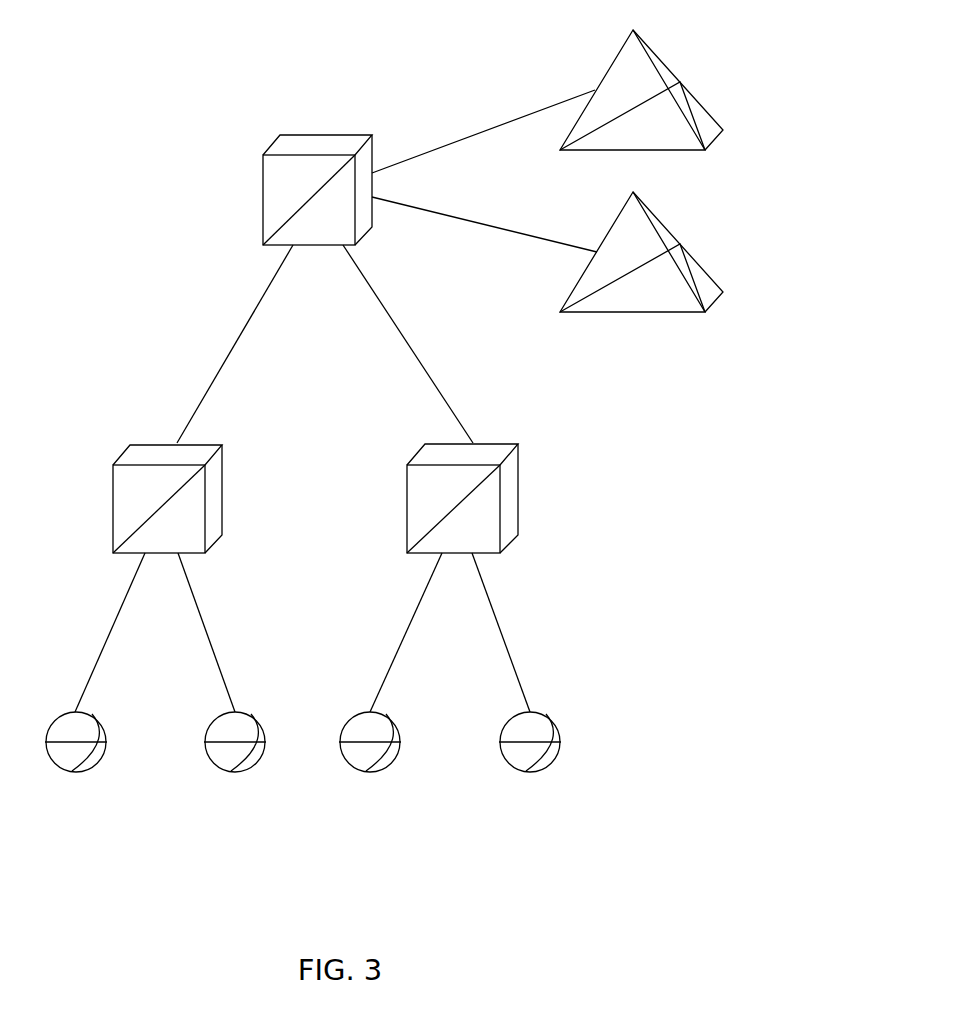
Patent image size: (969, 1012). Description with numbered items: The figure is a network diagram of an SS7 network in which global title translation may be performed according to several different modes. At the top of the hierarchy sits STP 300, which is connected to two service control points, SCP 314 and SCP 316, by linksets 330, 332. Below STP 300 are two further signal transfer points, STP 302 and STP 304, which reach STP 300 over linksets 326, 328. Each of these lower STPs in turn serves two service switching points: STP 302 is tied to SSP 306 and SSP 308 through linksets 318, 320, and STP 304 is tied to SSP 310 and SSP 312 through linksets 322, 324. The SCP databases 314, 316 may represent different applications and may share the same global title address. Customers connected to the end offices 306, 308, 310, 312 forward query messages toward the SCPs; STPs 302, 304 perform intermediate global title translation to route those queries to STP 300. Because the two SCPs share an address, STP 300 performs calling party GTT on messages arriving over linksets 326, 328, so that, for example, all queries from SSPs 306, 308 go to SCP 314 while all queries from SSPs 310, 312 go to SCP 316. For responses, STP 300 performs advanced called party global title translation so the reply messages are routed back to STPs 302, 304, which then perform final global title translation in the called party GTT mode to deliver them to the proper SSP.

The STP 300 is at (263, 178).
The STP 302 is at (113, 485).
The STP 304 is at (407, 485).
The SSP 306 is at (87, 770).
The SSP 308 is at (247, 770).
The SSP 310 is at (382, 770).
The SSP 312 is at (542, 770).
The SCP 314 is at (665, 65).
The SCP 316 is at (665, 227).
The linkset 318 is at (110, 632).
The linkset 320 is at (208, 632).
The linkset 322 is at (405, 632).
The linkset 324 is at (503, 632).
The linkset 326 is at (235, 345).
The linkset 328 is at (408, 345).
The linkset 330 is at (483, 132).
The linkset 332 is at (483, 223).